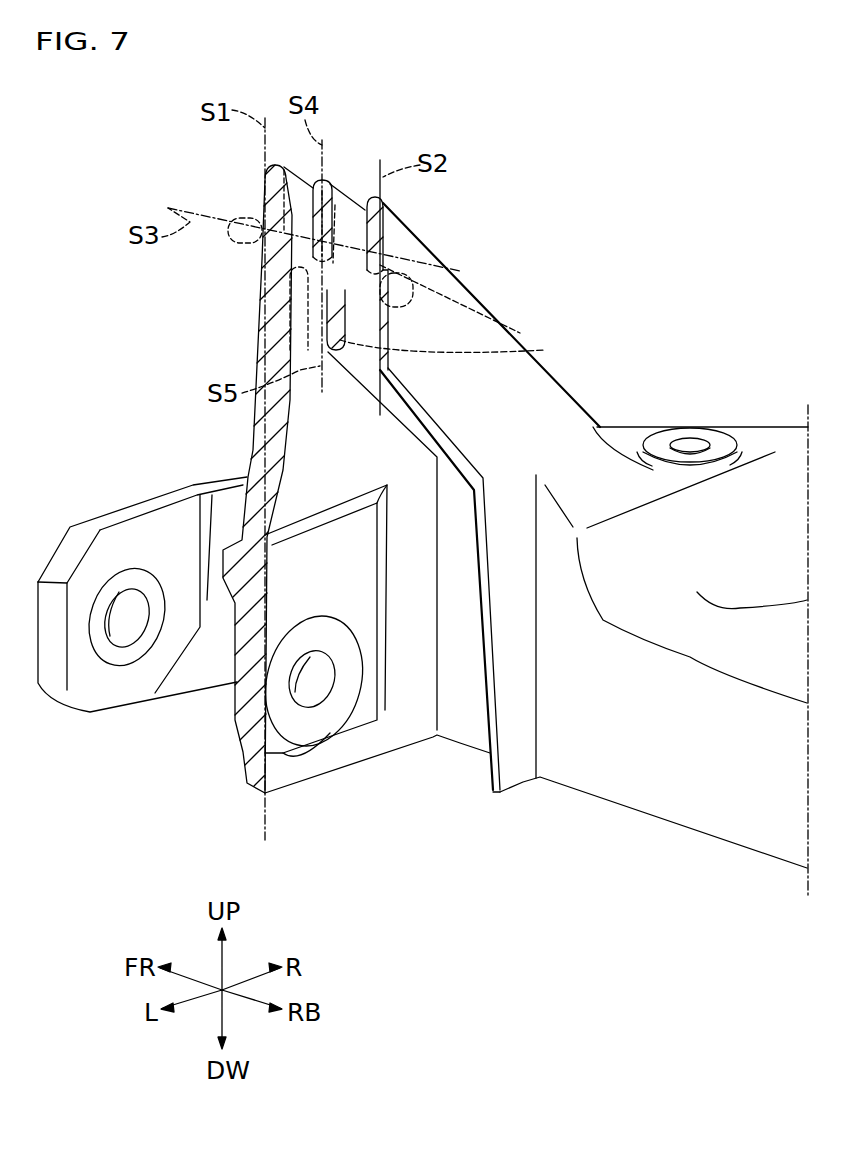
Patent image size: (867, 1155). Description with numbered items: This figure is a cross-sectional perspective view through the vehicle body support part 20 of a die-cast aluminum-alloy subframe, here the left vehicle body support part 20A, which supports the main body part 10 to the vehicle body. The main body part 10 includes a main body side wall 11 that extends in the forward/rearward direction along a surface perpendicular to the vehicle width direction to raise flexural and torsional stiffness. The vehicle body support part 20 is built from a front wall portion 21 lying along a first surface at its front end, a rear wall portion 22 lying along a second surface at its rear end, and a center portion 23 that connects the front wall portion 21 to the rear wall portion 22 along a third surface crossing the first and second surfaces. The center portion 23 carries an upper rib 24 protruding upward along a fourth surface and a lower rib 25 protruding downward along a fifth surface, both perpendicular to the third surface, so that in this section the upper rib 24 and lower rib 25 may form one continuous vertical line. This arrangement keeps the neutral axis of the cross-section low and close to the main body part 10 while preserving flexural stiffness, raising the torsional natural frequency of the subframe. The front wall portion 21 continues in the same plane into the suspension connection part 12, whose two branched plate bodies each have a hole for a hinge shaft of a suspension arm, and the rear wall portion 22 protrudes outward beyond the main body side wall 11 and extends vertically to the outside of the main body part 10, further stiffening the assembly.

The main body part 10 is at (722, 410).
The main body side wall 11 is at (470, 727).
The suspension connection part 12 is at (130, 710).
The vehicle body support part 20 is at (392, 482).
The left vehicle body support part 20A is at (392, 482).
The front wall portion 21 is at (262, 213).
The rear wall portion 22 is at (438, 285).
The center portion 23 is at (284, 200).
The upper rib 24 is at (332, 190).
The lower rib 25 is at (459, 350).